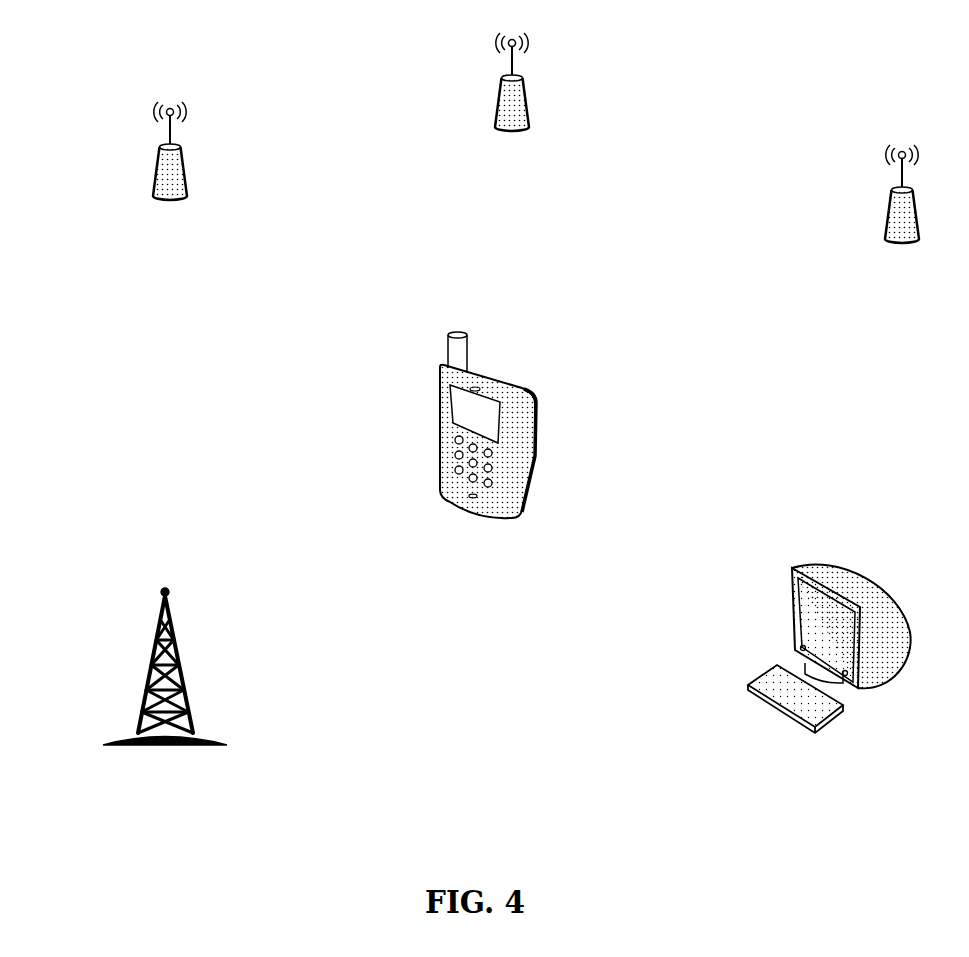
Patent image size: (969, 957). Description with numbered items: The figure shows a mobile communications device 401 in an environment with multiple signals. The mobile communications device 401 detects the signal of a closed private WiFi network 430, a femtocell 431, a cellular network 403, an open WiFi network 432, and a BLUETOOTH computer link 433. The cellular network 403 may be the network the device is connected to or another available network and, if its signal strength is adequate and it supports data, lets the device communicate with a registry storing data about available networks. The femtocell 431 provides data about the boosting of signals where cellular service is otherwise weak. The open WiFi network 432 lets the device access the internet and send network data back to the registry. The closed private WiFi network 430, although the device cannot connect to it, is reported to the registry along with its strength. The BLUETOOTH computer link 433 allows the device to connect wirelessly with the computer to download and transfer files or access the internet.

The mobile communications device 401 is at (437, 423).
The cellular network 403 is at (175, 650).
The closed private WiFi network 430 is at (157, 167).
The femtocell 431 is at (498, 108).
The open WiFi network 432 is at (888, 213).
The BLUETOOTH computer link 433 is at (792, 610).